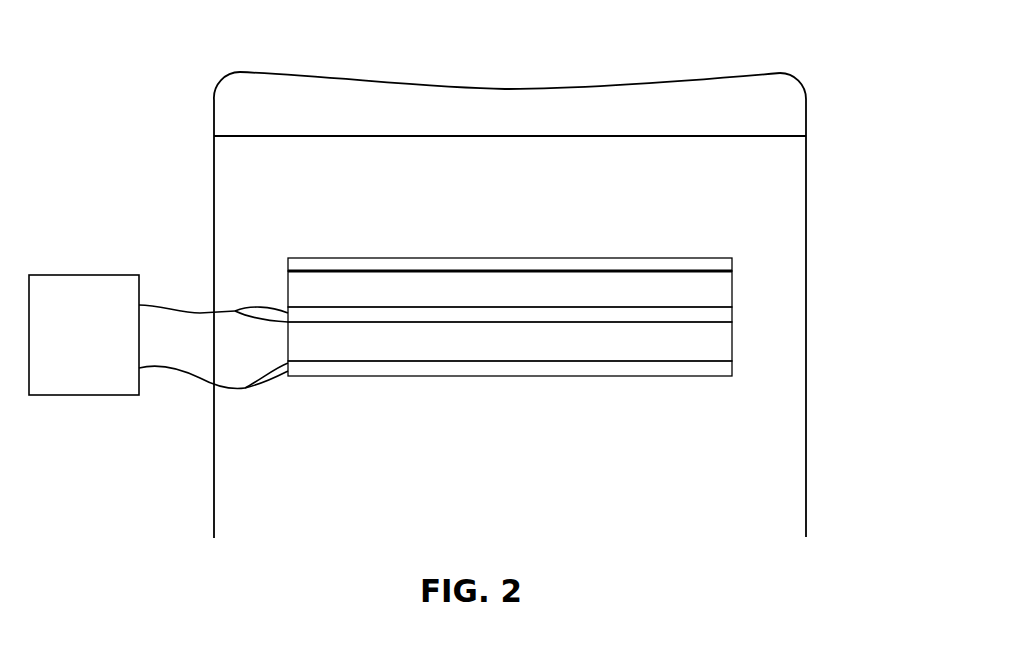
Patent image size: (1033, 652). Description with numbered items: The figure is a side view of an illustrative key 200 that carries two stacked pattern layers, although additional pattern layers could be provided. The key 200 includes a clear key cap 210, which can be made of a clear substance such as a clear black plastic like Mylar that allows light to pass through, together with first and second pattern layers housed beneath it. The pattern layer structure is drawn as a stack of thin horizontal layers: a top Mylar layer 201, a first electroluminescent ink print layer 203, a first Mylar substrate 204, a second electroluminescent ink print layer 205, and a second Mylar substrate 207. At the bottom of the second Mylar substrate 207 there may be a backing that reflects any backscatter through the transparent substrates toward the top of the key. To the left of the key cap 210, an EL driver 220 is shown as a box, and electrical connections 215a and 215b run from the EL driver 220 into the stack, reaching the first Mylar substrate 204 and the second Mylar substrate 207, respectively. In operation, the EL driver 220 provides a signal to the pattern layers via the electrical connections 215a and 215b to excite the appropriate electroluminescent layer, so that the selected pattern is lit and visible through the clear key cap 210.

The key 200 is at (504, 61).
The top Mylar layer 201 is at (733, 263).
The first electroluminescent ink print layer 203 is at (723, 288).
The first Mylar substrate 204 is at (723, 314).
The second electroluminescent ink print layer 205 is at (723, 330).
The second Mylar substrate 207 is at (733, 367).
The key cap 210 is at (788, 117).
The electrical connection 215a is at (203, 308).
The electrical connection 215b is at (197, 378).
The EL driver 220 is at (103, 395).